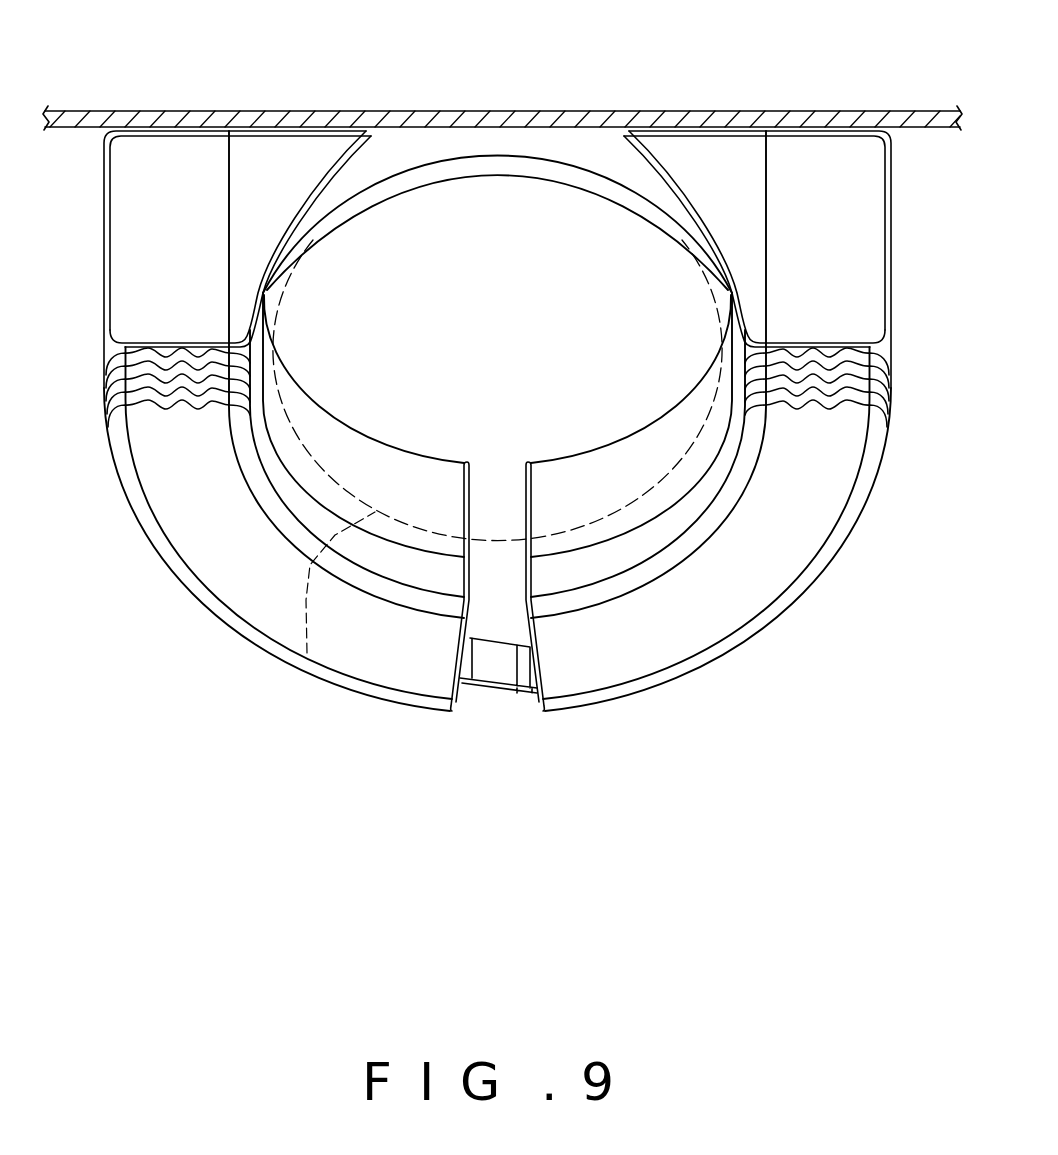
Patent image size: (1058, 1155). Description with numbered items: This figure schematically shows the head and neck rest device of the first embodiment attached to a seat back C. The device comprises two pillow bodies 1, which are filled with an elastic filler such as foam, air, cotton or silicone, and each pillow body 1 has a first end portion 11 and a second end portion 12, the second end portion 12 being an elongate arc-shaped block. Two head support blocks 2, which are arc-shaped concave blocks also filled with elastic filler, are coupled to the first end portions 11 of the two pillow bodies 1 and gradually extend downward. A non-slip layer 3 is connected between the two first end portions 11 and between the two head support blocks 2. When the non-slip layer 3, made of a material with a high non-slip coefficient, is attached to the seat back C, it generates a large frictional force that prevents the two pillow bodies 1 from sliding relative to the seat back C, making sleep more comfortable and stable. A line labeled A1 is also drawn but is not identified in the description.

The pillow body 1 is at (808, 520).
The first end portion 11 is at (885, 364).
The second end portion 12 is at (572, 706).
The head support block 2 is at (293, 148).
The non-slip layer 3 is at (556, 131).
The axis line A1 is at (307, 653).
The seat back C is at (420, 118).